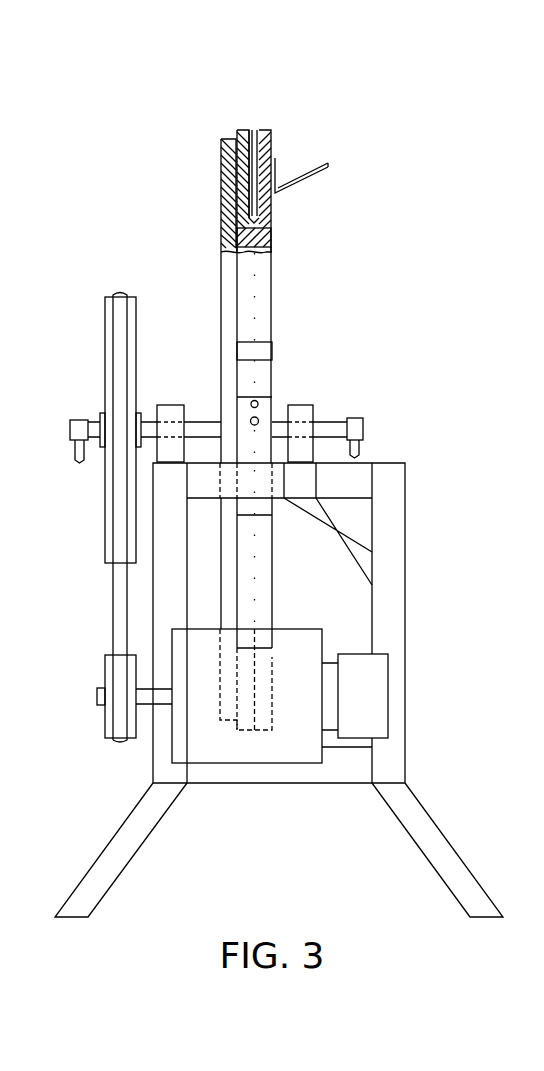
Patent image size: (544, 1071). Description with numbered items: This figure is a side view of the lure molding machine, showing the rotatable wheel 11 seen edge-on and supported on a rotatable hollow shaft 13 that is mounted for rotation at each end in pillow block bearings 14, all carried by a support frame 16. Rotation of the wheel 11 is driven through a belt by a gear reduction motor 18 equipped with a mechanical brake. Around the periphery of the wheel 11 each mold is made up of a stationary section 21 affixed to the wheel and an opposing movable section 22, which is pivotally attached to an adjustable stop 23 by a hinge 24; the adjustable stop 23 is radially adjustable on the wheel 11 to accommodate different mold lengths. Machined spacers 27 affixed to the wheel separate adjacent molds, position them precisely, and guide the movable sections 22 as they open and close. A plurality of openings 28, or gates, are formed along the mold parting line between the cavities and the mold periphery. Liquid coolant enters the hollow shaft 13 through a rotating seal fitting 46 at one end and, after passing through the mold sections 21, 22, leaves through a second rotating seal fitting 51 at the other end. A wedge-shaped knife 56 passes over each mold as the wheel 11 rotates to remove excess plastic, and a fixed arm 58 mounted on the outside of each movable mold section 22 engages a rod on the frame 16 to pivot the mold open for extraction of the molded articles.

The rotatable wheel 11 is at (221, 170).
The rotatable hollow shaft 13 is at (328, 425).
The pillow block bearings 14 is at (175, 406).
The support frame 16 is at (405, 613).
The gear reduction motor 18 is at (202, 728).
The stationary section 21 is at (244, 128).
The movable section 22 is at (263, 128).
The adjustable stop 23 is at (274, 244).
The hinge 24 is at (274, 231).
The machined spacers 27 is at (265, 350).
The openings 28 is at (256, 598).
The rotating seal fitting 46 is at (78, 420).
The second rotating seal fitting 51 is at (358, 418).
The wedge-shaped knife 56 is at (252, 400).
The fixed arm 58 is at (308, 178).